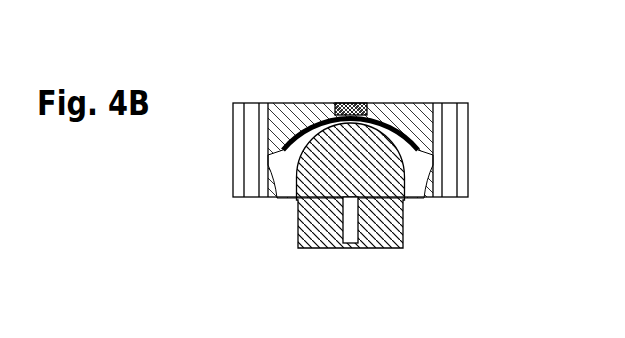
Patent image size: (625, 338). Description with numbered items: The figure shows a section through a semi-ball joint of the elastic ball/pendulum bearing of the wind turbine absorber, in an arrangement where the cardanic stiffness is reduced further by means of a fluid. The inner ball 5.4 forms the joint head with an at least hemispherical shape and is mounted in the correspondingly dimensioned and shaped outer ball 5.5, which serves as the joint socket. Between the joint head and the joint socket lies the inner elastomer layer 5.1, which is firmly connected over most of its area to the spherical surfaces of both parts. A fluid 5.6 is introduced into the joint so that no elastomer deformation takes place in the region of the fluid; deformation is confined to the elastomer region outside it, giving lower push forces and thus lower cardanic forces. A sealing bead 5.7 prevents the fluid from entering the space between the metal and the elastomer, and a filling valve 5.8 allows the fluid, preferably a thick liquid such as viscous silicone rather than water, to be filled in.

The inner elastomer layer 5.1 is at (289, 196).
The inner ball 5.4 is at (387, 248).
The outer ball 5.5 is at (303, 112).
The fluid 5.6 is at (383, 118).
The sealing bead 5.7 is at (441, 193).
The filling valve 5.8 is at (357, 107).